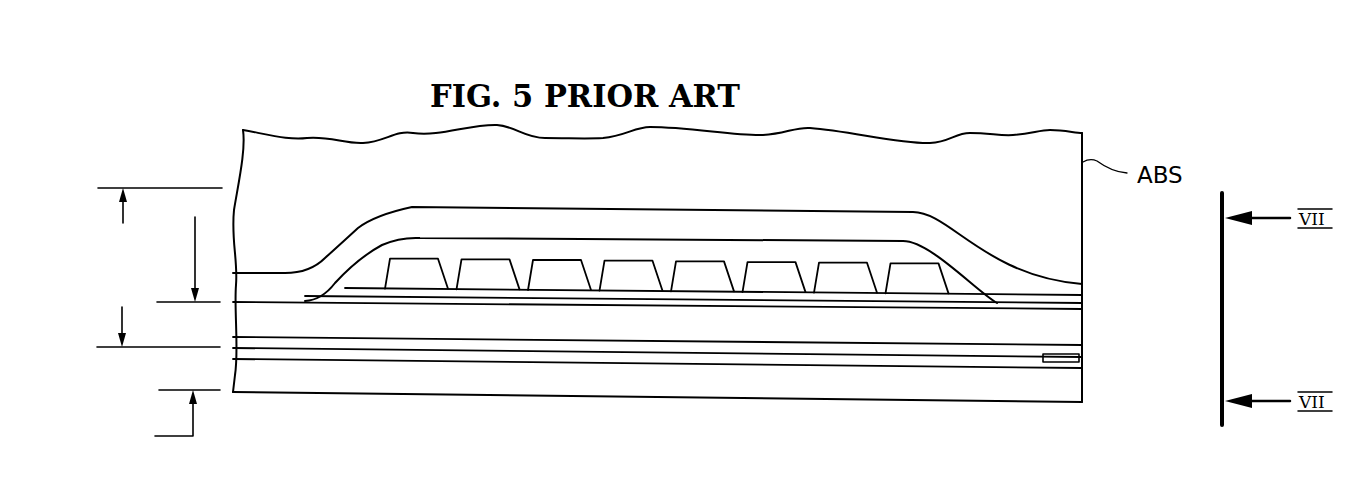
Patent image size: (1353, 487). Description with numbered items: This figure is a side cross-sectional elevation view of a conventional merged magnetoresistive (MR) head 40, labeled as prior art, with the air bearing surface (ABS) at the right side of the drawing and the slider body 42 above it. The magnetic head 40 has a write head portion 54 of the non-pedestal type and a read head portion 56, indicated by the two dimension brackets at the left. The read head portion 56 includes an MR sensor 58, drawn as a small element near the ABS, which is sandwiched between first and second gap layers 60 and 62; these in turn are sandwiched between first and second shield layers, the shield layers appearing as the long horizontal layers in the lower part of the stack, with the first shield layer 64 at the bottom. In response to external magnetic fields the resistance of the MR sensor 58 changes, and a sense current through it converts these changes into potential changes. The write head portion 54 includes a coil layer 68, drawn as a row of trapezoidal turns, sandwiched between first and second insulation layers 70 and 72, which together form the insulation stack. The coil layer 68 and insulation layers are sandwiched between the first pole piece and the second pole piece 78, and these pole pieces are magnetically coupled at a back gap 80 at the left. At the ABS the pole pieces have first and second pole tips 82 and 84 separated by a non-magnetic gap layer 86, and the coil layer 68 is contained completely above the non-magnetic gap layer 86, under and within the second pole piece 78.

The merged magnetoresistive head 40 is at (212, 103).
The slider / overcoat 42 is at (313, 157).
The write head portion 54 is at (153, 267).
The read head portion 56 is at (154, 438).
The MR sensor 58 is at (1082, 358).
The first gap layer 60 is at (677, 368).
The second gap layer 62 is at (598, 341).
The first shield layer 64 is at (787, 378).
The coil layer 68 is at (702, 273).
The first insulation layer 70 is at (480, 295).
The second insulation layer 72 is at (958, 287).
The second pole piece 78 is at (790, 227).
The back gap 80 is at (263, 273).
The first pole tip 82 is at (1082, 330).
The second pole tip 84 is at (1070, 298).
The non-magnetic gap layer 86 is at (1081, 310).